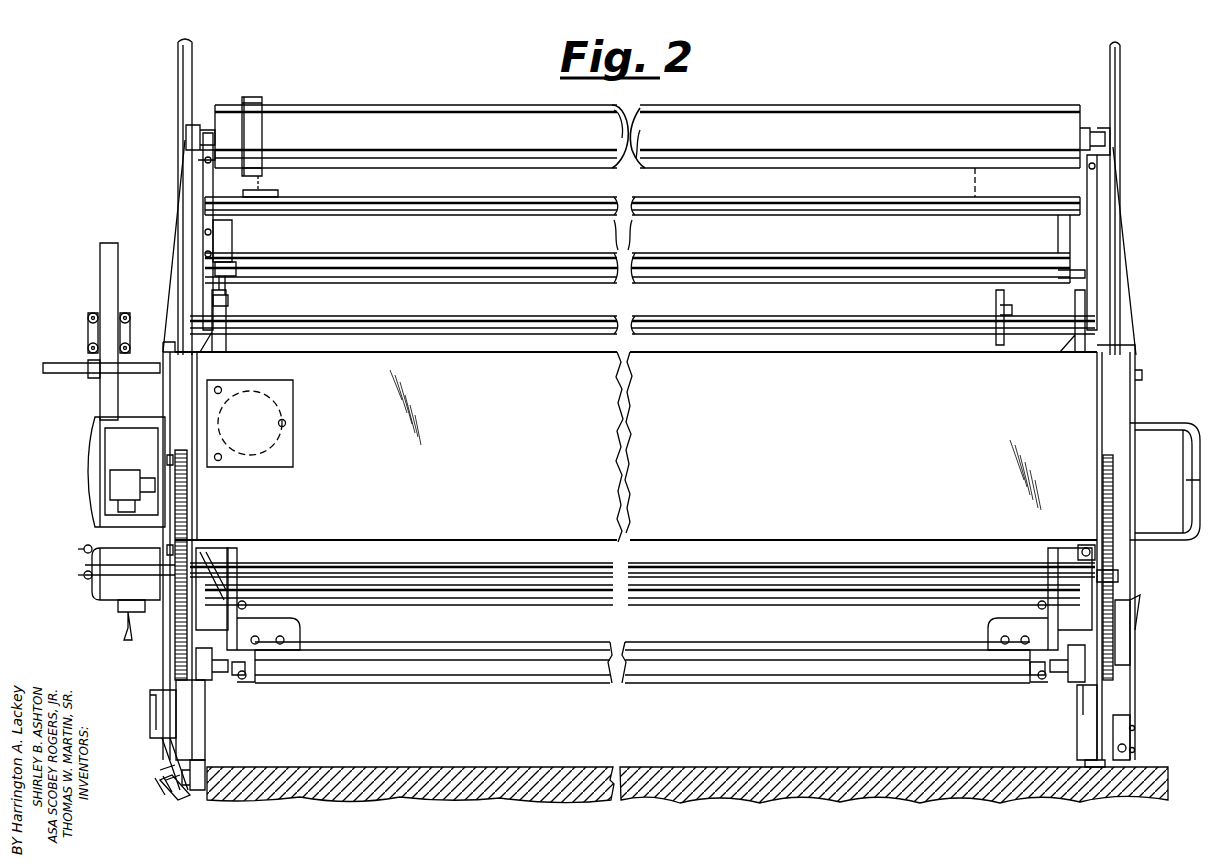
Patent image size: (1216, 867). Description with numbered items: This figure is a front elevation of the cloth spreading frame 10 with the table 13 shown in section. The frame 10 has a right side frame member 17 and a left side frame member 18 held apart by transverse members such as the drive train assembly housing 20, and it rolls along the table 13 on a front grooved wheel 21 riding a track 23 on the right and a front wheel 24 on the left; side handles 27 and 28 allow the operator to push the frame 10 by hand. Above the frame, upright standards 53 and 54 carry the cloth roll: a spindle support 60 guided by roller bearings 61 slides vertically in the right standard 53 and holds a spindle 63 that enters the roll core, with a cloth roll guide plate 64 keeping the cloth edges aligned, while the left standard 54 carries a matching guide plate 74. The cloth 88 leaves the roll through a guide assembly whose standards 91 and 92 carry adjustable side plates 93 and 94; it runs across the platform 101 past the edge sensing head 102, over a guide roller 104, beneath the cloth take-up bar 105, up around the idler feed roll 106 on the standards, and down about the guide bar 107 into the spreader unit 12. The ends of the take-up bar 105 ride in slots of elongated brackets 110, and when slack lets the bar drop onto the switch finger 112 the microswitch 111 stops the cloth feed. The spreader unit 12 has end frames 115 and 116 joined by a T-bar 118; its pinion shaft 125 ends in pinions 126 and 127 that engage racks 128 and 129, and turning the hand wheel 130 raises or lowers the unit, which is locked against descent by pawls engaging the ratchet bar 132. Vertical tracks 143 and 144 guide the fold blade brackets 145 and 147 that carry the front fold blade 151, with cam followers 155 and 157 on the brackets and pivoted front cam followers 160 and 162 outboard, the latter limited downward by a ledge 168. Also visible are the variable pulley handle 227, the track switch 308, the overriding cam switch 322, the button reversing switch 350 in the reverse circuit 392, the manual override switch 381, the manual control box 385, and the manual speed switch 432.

The frame 10 is at (1152, 344).
The spreader unit 12 is at (838, 690).
The table 13 is at (684, 768).
The right side frame member 17 is at (165, 398).
The left side frame member 18 is at (1122, 402).
The drive train assembly housing 20 is at (712, 434).
The front grooved wheel 21 is at (200, 765).
The track 23 is at (200, 790).
The front wheel 24 is at (1080, 763).
The side handle 27 is at (95, 473).
The side handle 28 is at (1186, 482).
The right upright standard 53 is at (100, 273).
The left upright standard 54 is at (1090, 302).
The spindle support 60 is at (92, 380).
The roller bearings 61 is at (135, 344).
The spindle 63 is at (65, 376).
The cloth roll guide plate 64 is at (225, 345).
The guide plate 74 is at (995, 302).
The cloth 88 is at (343, 106).
The standard 91 is at (180, 229).
The standard 92 is at (1113, 238).
The side plate 93 is at (192, 172).
The side plate 94 is at (1098, 190).
The platform 101 is at (795, 247).
The edge sensing head 102 is at (268, 192).
The guide roller 104 is at (432, 222).
The cloth take-up bar 105 is at (230, 268).
The idler feed roll 106 is at (478, 141).
The guide bar 107 is at (462, 300).
The elongated bracket 110 is at (208, 190).
The microswitch 111 is at (222, 233).
The switch finger 112 is at (228, 292).
The right spreader end frame 115 is at (205, 555).
The left spreader end frame 116 is at (1083, 548).
The T-bar 118 is at (802, 598).
The pinion shaft 125 is at (728, 552).
The right pinion 126 is at (150, 568).
The left pinion 127 is at (1118, 576).
The rack 128 is at (180, 474).
The rack 129 is at (1103, 470).
The hand wheel 130 is at (92, 560).
The ratchet bar 132 is at (188, 500).
The vertical track 143 is at (238, 556).
The vertical track 144 is at (1045, 555).
The fold blade bracket 145 is at (245, 620).
The fold blade bracket 147 is at (1040, 622).
The front fold blade 151 is at (508, 668).
The cam follower 155 is at (236, 676).
The cam follower 157 is at (1045, 680).
The front cam follower 160 is at (222, 676).
The front cam follower 162 is at (1065, 680).
The ledge 168 is at (172, 680).
The handle 227 is at (122, 470).
The track switch 308 is at (160, 812).
The overriding cam switch 322 is at (1125, 630).
The button reversing switch 350 is at (1126, 745).
The manual override switch 381 is at (126, 628).
The manual control box 385 is at (136, 595).
The reverse circuit 392 is at (82, 546).
The manual switch 432 is at (78, 576).